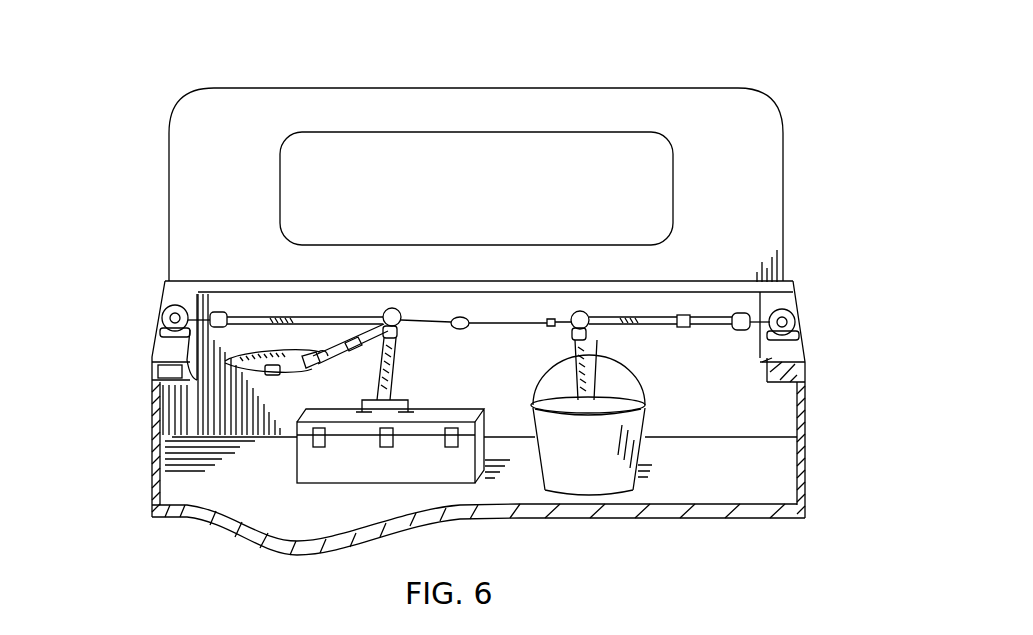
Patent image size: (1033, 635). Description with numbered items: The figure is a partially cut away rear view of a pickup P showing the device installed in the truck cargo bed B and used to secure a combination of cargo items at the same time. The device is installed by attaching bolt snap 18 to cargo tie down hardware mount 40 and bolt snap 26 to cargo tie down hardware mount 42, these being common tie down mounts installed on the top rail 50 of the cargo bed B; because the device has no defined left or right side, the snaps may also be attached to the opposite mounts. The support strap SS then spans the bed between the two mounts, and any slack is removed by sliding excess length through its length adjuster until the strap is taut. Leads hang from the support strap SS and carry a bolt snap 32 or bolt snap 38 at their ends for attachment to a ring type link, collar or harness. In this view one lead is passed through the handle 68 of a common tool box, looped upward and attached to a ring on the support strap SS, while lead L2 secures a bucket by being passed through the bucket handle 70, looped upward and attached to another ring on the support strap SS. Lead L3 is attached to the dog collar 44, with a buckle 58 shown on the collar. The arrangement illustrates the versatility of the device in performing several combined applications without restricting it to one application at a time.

The pickup truck bed / top piece P is at (210, 125).
The truck cargo bed B is at (518, 493).
The bolt snap 18 is at (190, 310).
The bolt snap 26 is at (767, 317).
The cargo tie down hardware mount 40 is at (162, 328).
The cargo tie down hardware mount 42 is at (797, 332).
The top rail 50 is at (778, 293).
The support strap SS is at (275, 318).
The lead strap L3 is at (410, 322).
The lead strap L2 is at (393, 373).
The bolt snap 32 is at (380, 324).
The bolt snap 38 is at (588, 335).
The dog collar 44 is at (273, 378).
The buckle / clevis 58 is at (300, 368).
The handle 68 is at (400, 413).
The bucket handle 70 is at (637, 377).